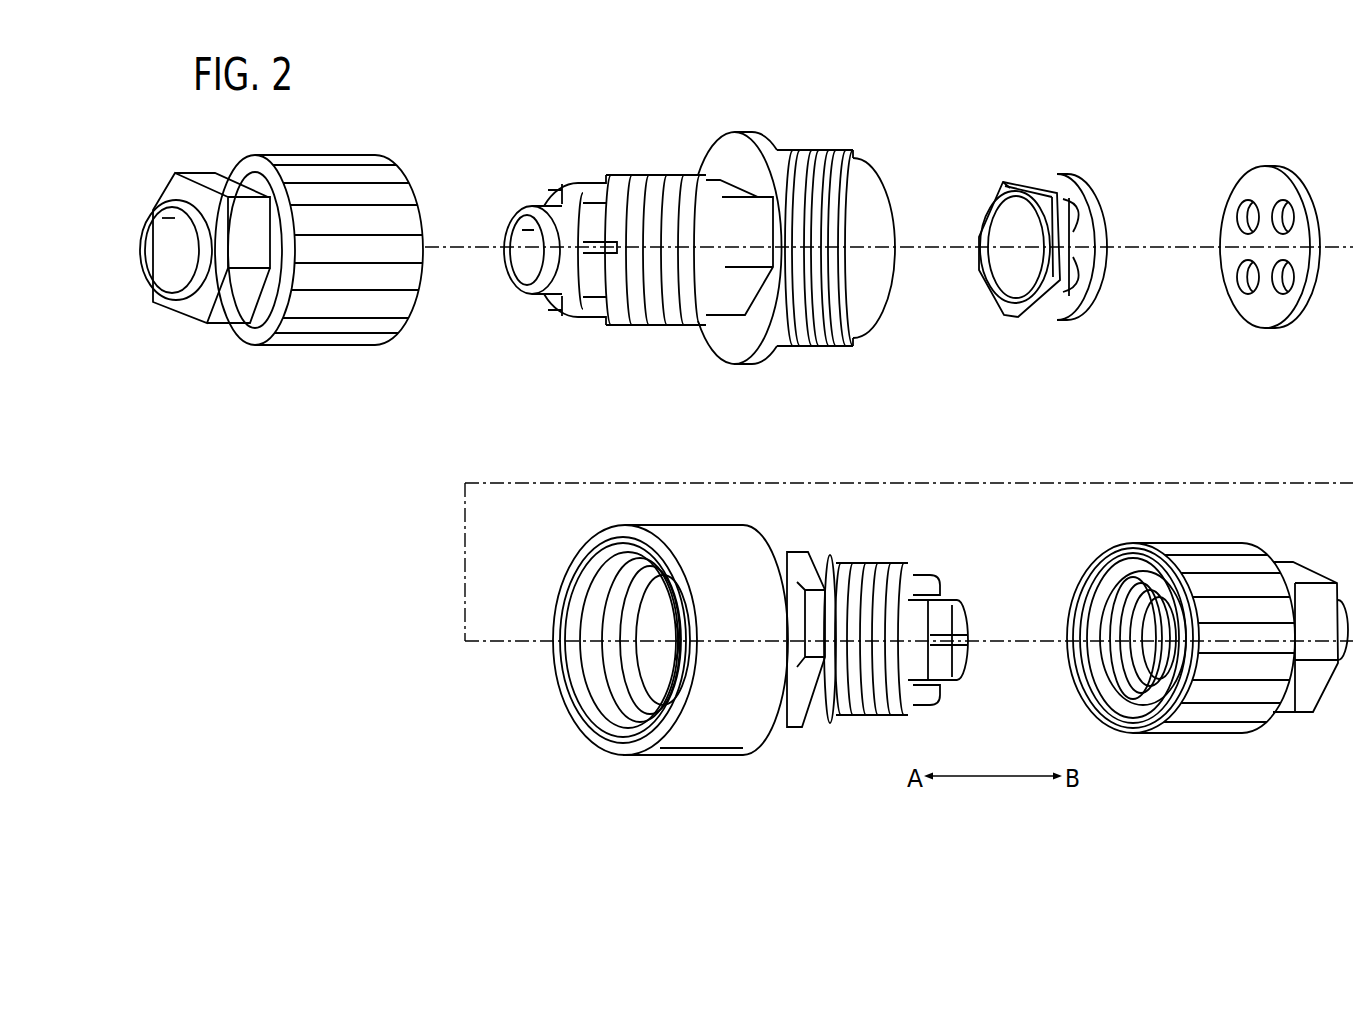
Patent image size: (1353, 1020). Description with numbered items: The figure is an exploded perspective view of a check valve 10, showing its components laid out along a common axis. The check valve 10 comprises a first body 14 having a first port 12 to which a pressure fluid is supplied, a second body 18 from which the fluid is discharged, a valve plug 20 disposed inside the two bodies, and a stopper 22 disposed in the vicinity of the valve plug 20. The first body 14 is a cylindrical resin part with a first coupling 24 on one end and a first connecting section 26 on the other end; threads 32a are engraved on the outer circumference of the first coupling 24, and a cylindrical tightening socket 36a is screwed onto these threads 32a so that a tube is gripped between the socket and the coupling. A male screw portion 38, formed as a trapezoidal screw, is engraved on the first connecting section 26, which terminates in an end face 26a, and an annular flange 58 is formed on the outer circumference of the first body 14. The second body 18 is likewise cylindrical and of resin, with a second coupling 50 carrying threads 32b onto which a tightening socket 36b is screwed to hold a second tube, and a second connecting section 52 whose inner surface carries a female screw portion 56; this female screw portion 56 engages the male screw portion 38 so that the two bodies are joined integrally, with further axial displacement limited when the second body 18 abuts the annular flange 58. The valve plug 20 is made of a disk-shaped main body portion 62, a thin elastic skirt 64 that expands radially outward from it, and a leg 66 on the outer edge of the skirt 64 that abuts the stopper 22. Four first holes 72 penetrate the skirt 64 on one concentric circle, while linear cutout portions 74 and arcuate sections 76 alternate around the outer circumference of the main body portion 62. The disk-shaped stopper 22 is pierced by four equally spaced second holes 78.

The check valve 10 is at (1197, 91).
The first port 12 is at (523, 257).
The first body 14 is at (790, 122).
The second body 18 is at (754, 763).
The valve plug 20 is at (1034, 160).
The stopper 22 is at (1289, 160).
The first coupling 24 is at (580, 307).
The first connecting section 26 is at (810, 347).
The end face 26a is at (887, 273).
The threads 32a is at (632, 185).
The threads 32b is at (875, 580).
The tightening socket 36a is at (302, 352).
The tightening socket 36b is at (1230, 752).
The male screw portion 38 is at (828, 170).
The second coupling 50 is at (928, 585).
The second connecting section 52 is at (695, 737).
The female screw portion 56 is at (597, 610).
The annular flange 58 is at (718, 151).
The main body portion 62 is at (1005, 268).
The skirt 64 is at (1082, 257).
The leg 66 is at (1082, 308).
The first holes 72 is at (1077, 278).
The cutout portions 74 is at (1063, 240).
The arcuate sections 76 is at (1002, 188).
The second holes 78 is at (1245, 217).